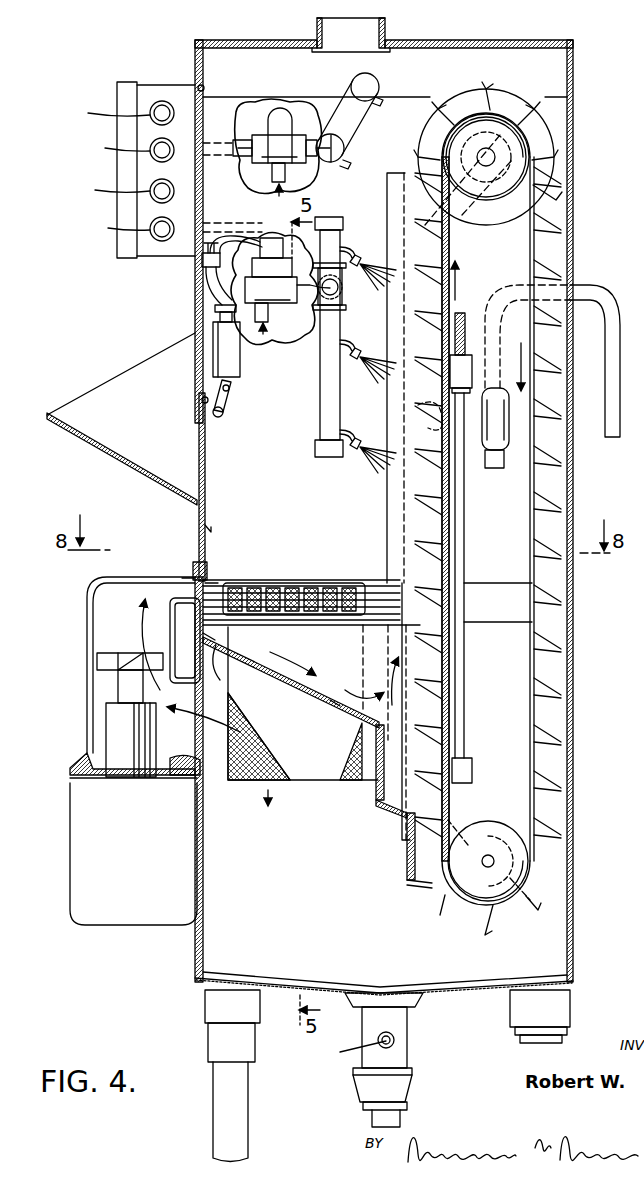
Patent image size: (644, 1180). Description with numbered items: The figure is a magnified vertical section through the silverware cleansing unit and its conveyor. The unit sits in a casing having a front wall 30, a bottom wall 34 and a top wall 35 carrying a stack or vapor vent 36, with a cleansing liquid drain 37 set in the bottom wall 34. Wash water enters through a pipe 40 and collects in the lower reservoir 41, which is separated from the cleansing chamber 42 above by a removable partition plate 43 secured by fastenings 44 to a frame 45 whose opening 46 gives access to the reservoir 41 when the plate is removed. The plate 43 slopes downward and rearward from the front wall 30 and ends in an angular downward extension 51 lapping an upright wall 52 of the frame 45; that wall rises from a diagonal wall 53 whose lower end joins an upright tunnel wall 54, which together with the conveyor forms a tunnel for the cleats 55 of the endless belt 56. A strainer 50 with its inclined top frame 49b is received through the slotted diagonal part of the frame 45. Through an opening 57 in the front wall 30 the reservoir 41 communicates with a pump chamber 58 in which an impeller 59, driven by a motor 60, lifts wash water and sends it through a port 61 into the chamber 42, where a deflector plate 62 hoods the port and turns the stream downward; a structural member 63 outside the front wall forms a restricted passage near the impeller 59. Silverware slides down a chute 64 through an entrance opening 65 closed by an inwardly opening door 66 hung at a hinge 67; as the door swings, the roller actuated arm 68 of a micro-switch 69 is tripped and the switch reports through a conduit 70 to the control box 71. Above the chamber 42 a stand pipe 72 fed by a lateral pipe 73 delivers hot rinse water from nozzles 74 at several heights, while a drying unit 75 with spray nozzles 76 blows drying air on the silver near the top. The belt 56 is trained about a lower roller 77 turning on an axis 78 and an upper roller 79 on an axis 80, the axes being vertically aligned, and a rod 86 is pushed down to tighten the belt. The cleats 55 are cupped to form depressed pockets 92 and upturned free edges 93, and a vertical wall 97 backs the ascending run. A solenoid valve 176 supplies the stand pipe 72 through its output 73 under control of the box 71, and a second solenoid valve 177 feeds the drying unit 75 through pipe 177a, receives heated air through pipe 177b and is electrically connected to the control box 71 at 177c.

The front wall 30 is at (203, 905).
The bottom wall 34 is at (445, 980).
The top wall 35 is at (452, 42).
The stack or vapor vent 36 is at (385, 25).
The cleansing liquid drain 37 is at (405, 1062).
The pipe 40 is at (497, 468).
The reservoir 41 is at (300, 868).
The cleansing chamber 42 is at (345, 650).
The partition plate 43 is at (300, 695).
The fastenings 44 is at (215, 640).
The frame 45 is at (222, 680).
The opening 46 is at (332, 706).
The top frame 49b is at (272, 583).
The strainer 50 is at (247, 780).
The angular downward extension 51 is at (376, 790).
The upright wall 52 is at (290, 770).
The diagonal wall 53 is at (384, 810).
The upright tunnel wall 54 is at (407, 873).
The cleats 55 is at (539, 690).
The endless belt 56 is at (470, 878).
The opening 57 is at (200, 743).
The pump chamber 58 is at (88, 630).
The impeller 59 is at (110, 655).
The motor 60 is at (147, 866).
The port 61 is at (182, 578).
The deflector plate 62 is at (216, 580).
The structural member 63 is at (185, 640).
The chute 64 is at (75, 440).
The entrance opening 65 is at (195, 468).
The door 66 is at (205, 483).
The hinge 67 is at (200, 400).
The roller actuated arm 68 is at (228, 405).
The micro-switch 69 is at (240, 365).
The conduit 70 is at (203, 288).
The electrical control box 71 is at (152, 258).
The stand pipe 72 is at (322, 410).
The lateral pipe 73 is at (305, 296).
The nozzles 74 is at (355, 247).
The drying unit 75 is at (343, 125).
The spray nozzles 76 is at (347, 157).
The lower roller 77 is at (497, 830).
The axis 78 is at (508, 900).
The upper roller 79 is at (492, 120).
The axis 80 is at (484, 166).
The rod 86 is at (465, 560).
The depressed pockets 92 is at (425, 510).
The upturned free edges 93 is at (415, 545).
The vertical wall 97 is at (455, 800).
The solenoid valve 176 is at (280, 288).
The second solenoid valve 177 is at (277, 146).
The pipe 177a is at (318, 168).
The pipe 177b is at (272, 175).
The electrical connection 177c is at (240, 156).